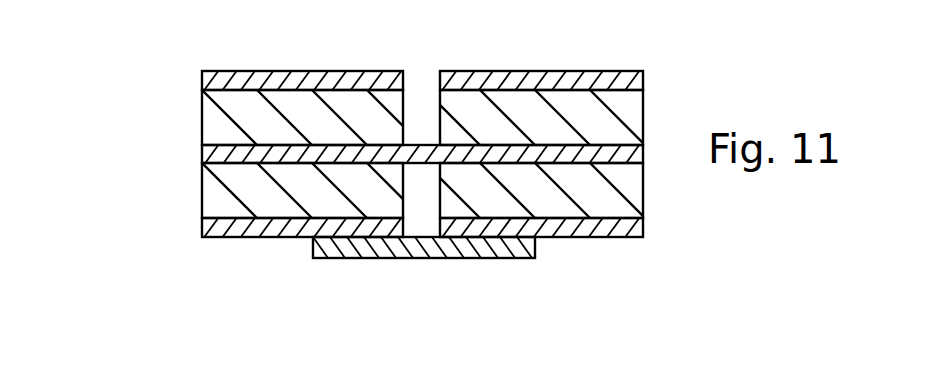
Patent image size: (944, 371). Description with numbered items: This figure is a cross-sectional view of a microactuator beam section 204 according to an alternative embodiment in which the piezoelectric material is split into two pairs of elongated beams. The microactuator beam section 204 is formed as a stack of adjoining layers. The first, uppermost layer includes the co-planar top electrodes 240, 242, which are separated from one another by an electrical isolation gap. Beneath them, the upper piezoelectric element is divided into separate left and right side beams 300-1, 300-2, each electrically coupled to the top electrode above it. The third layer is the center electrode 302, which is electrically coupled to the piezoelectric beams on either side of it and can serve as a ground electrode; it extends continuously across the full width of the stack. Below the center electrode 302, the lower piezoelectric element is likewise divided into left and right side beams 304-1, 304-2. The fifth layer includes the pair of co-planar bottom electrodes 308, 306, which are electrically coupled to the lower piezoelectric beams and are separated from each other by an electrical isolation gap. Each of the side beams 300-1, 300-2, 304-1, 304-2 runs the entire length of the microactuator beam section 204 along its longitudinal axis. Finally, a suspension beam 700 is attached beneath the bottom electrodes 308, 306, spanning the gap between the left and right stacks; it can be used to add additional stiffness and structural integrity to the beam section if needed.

The microactuator beam section 204 is at (163, 72).
The top electrode 242 is at (268, 71).
The top electrode 240 is at (568, 71).
The left side beam of piezoelectric element 300 300-1 is at (202, 118).
The right side beam of piezoelectric element 300 300-2 is at (643, 120).
The center electrode 302 is at (202, 154).
The left side beam of piezoelectric element 304 304-1 is at (202, 193).
The right side beam of piezoelectric element 304 304-2 is at (643, 187).
The bottom electrode 308 is at (238, 237).
The bottom electrode 306 is at (595, 237).
The suspension beam 700 is at (410, 258).